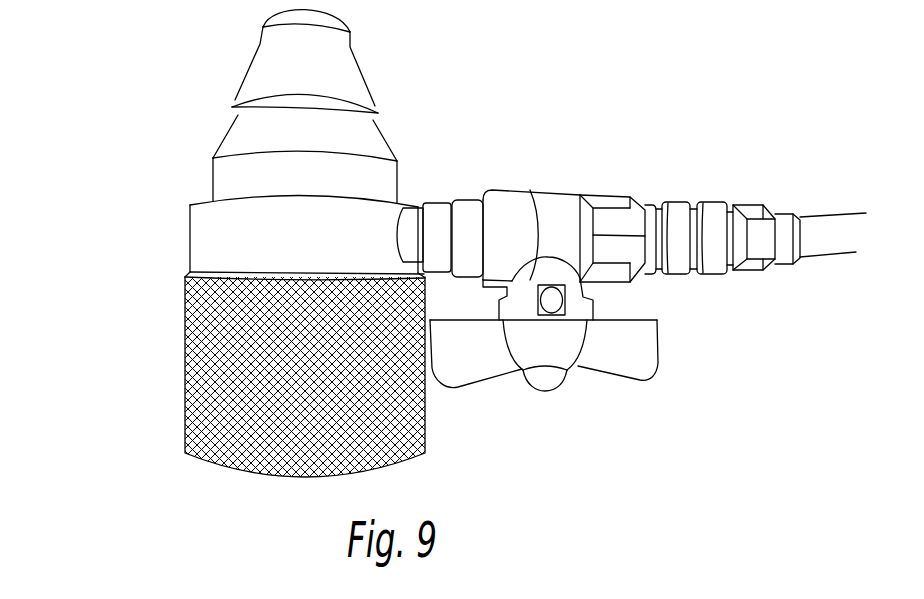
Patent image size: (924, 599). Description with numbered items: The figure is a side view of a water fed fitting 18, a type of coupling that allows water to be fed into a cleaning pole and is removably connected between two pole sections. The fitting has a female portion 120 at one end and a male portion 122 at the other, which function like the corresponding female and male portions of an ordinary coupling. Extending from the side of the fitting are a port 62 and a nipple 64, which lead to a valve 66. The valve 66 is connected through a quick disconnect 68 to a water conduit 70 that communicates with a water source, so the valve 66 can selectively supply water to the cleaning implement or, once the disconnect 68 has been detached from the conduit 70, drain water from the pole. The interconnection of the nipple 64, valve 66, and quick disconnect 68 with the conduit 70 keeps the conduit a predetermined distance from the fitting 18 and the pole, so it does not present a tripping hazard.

The water fed fitting 18 is at (177, 318).
The port 62 is at (412, 205).
The nipple 64 is at (438, 201).
The valve 66 is at (563, 200).
The quick disconnect 68 is at (730, 207).
The water conduit 70 is at (853, 262).
The female portion 120 is at (185, 455).
The male portion 122 is at (263, 72).